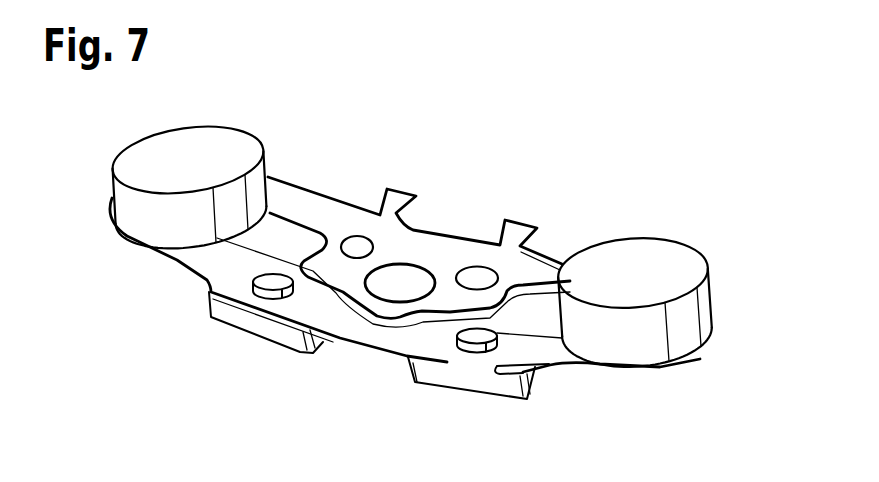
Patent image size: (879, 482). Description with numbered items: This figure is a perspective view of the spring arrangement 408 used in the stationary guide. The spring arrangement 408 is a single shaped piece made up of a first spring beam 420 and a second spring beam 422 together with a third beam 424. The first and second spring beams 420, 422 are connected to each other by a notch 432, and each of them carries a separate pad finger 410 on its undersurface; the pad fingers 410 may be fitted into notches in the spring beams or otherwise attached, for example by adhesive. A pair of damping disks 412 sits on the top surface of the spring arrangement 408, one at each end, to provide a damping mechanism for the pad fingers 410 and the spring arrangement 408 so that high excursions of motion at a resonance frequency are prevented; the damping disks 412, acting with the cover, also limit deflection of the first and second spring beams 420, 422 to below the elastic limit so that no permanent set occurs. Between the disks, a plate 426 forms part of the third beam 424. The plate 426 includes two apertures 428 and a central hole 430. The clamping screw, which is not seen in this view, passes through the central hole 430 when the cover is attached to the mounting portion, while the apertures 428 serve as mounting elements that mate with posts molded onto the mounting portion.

The spring arrangement 408 is at (282, 414).
The pad fingers 410 is at (206, 318).
The damping disks 412 is at (150, 153).
The first spring beam 420 is at (177, 260).
The second spring beam 422 is at (590, 366).
The third beam 424 is at (298, 200).
The plate 426 is at (460, 233).
The apertures 428 is at (357, 236).
The central hole 430 is at (400, 278).
The notch 432 is at (377, 348).